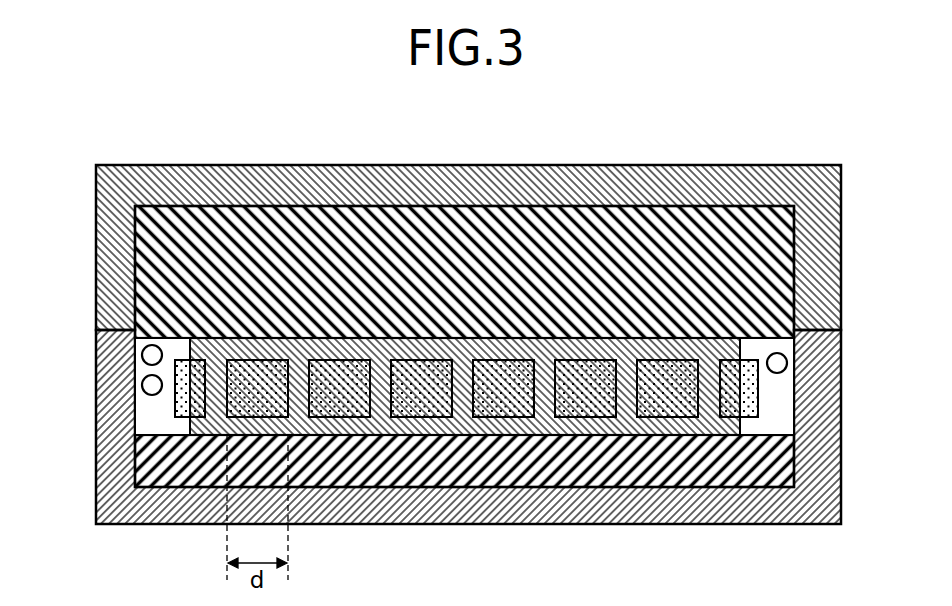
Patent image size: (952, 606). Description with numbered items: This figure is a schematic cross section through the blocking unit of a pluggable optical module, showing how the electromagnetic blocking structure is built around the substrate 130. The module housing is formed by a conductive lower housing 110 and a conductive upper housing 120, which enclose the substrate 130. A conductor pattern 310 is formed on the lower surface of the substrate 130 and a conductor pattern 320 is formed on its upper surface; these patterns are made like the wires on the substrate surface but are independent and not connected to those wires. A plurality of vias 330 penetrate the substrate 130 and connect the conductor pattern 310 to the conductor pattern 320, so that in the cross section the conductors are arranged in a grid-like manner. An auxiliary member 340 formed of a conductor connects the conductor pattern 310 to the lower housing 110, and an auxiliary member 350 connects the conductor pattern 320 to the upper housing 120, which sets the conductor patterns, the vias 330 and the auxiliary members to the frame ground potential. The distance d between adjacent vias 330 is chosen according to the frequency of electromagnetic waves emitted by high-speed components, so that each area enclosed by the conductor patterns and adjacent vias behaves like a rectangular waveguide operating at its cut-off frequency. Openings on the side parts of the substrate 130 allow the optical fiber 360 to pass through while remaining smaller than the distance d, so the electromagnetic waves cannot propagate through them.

The lower housing 110 is at (157, 507).
The upper housing 120 is at (150, 182).
The substrate 130 is at (187, 403).
The conductor pattern 310 is at (740, 425).
The conductor pattern 320 is at (740, 342).
The vias 330 is at (710, 392).
The auxiliary member 340 is at (683, 487).
The auxiliary member 350 is at (737, 230).
The optical fiber 360 is at (145, 358).